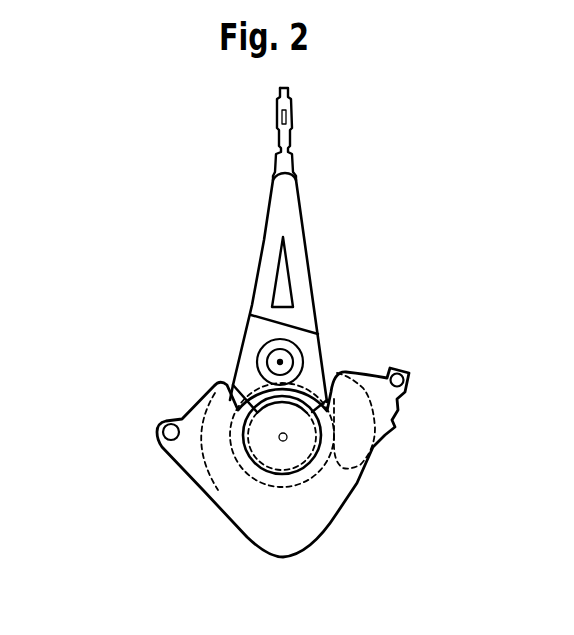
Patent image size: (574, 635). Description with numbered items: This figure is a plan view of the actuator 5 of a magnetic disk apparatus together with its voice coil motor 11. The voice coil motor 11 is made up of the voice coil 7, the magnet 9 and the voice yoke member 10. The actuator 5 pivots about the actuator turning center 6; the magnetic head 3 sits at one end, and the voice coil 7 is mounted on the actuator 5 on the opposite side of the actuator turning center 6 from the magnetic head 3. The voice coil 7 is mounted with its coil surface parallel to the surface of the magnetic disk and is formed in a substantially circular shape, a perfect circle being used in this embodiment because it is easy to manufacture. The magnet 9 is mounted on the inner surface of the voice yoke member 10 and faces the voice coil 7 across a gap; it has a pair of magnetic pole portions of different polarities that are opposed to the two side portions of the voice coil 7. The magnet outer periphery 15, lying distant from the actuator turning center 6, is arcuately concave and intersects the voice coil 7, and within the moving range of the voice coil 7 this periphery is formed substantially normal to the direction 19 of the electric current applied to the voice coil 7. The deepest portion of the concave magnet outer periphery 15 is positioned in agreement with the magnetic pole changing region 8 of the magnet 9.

The magnetic head 3 is at (278, 114).
The actuator 5 is at (256, 250).
The actuator turning center 6 is at (290, 357).
The voice coil 7 is at (233, 387).
The magnetic pole changing region 8 is at (290, 440).
The magnet 9 is at (362, 433).
The voice yoke member 10 is at (251, 462).
The voice coil motor 11 is at (176, 453).
The magnet outer periphery 15 is at (281, 460).
The direction of electric current 19 is at (275, 462).